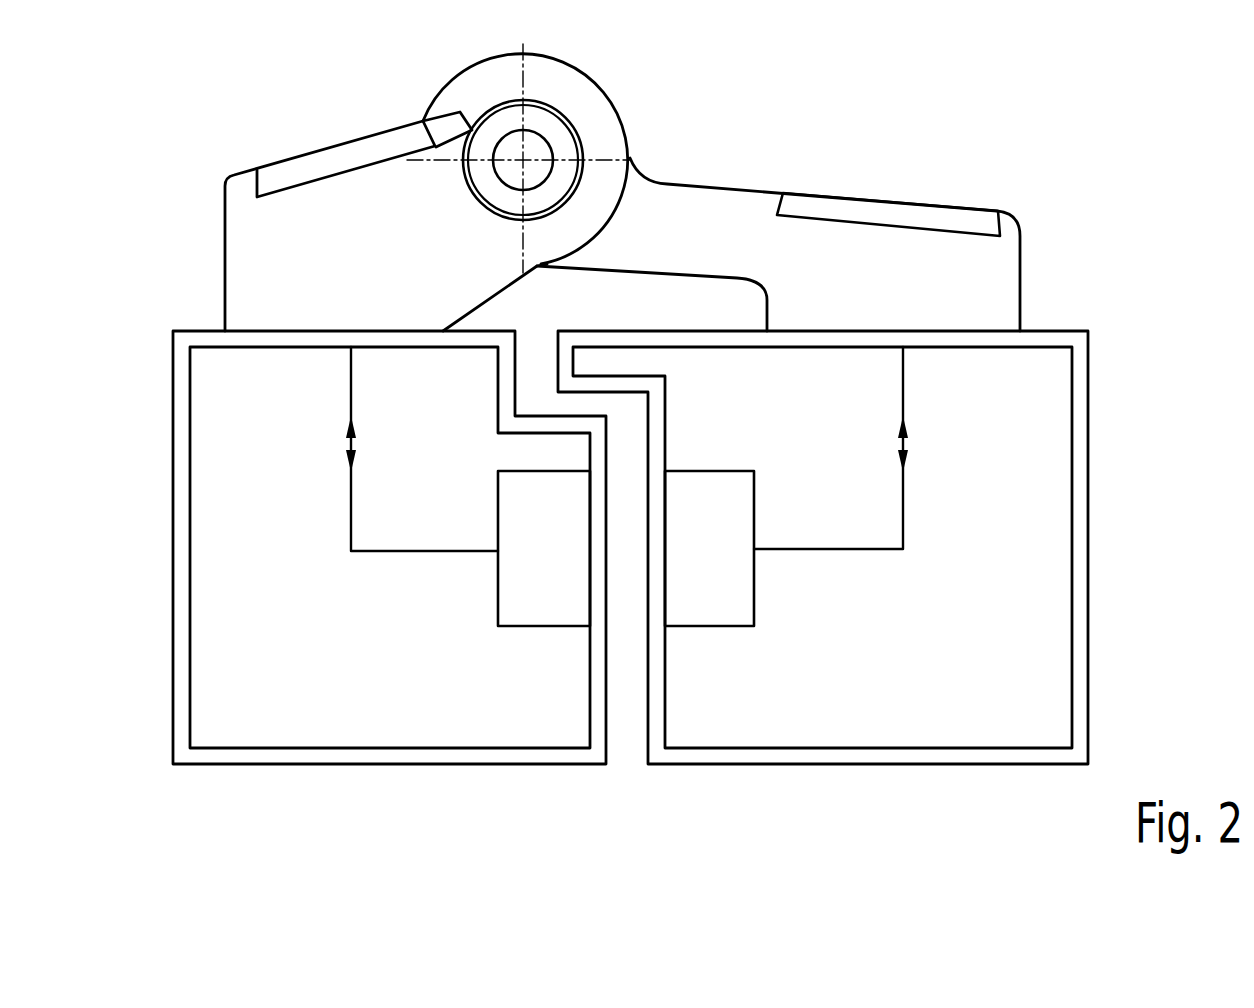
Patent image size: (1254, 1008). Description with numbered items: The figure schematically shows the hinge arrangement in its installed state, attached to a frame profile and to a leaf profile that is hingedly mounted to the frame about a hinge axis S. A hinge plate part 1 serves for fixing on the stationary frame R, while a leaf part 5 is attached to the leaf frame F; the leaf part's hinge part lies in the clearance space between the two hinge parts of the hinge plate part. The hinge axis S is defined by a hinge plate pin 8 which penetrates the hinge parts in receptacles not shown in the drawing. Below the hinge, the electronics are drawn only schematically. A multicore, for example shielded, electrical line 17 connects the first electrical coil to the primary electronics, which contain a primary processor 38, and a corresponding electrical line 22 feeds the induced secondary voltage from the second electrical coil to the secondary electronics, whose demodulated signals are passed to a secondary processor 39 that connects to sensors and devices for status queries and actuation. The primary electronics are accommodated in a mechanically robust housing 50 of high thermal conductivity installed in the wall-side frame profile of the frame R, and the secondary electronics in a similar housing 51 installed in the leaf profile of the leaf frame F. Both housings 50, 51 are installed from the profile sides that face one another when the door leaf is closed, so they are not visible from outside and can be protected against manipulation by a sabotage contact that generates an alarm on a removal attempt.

The hinge plate part 1 is at (258, 258).
The leaf part 5 is at (985, 278).
The hinge plate pin 8 is at (527, 156).
The hinge axis S is at (523, 160).
The electrical line 17 is at (351, 512).
The electrical line 22 is at (903, 510).
The primary processor 38 is at (548, 594).
The secondary processor 39 is at (711, 594).
The housing 50 is at (506, 588).
The housing 51 is at (747, 588).
The stationary frame R is at (226, 572).
The leaf frame F is at (1036, 570).